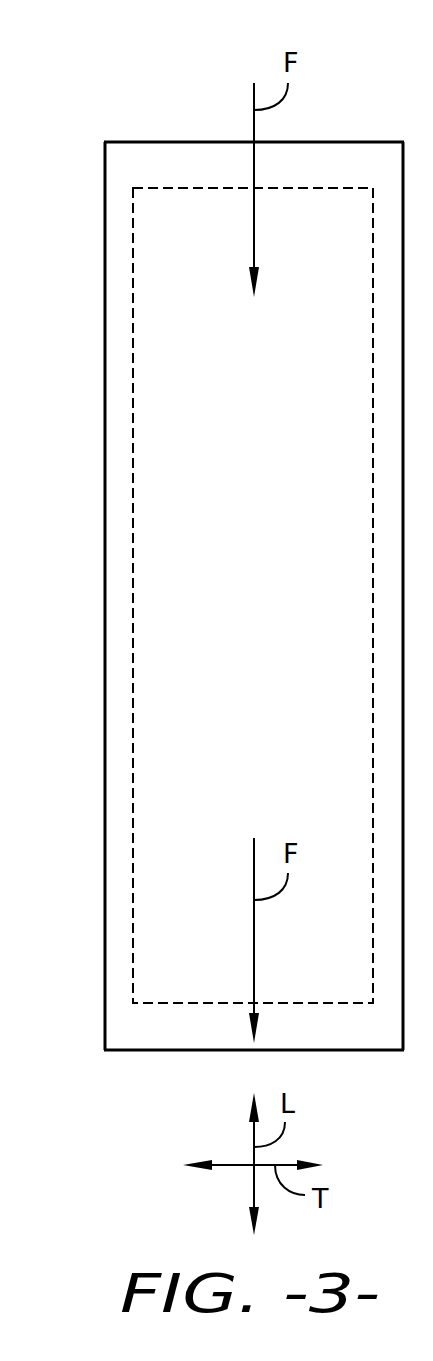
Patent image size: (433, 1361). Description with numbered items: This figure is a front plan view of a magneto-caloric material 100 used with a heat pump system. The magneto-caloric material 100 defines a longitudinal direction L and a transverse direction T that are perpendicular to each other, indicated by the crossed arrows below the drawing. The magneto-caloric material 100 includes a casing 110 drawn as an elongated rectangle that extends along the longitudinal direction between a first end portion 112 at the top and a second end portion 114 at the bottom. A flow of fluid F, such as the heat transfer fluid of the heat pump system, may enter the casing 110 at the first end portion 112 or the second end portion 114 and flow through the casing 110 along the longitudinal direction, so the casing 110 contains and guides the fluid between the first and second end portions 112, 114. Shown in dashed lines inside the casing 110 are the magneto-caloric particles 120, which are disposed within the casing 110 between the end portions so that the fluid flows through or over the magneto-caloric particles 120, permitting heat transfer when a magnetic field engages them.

The magneto-caloric material 100 is at (130, 73).
The casing 110 is at (105, 385).
The first end portion 112 is at (92, 163).
The second end portion 114 is at (92, 1022).
The magneto-caloric particles 120 is at (133, 622).